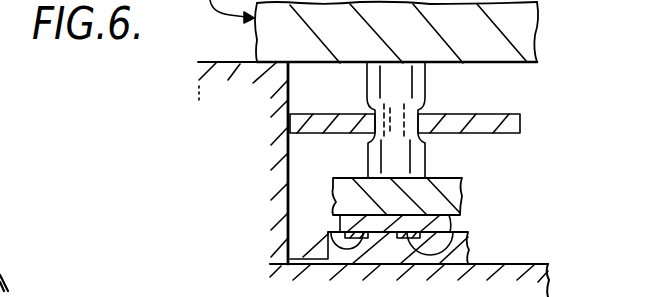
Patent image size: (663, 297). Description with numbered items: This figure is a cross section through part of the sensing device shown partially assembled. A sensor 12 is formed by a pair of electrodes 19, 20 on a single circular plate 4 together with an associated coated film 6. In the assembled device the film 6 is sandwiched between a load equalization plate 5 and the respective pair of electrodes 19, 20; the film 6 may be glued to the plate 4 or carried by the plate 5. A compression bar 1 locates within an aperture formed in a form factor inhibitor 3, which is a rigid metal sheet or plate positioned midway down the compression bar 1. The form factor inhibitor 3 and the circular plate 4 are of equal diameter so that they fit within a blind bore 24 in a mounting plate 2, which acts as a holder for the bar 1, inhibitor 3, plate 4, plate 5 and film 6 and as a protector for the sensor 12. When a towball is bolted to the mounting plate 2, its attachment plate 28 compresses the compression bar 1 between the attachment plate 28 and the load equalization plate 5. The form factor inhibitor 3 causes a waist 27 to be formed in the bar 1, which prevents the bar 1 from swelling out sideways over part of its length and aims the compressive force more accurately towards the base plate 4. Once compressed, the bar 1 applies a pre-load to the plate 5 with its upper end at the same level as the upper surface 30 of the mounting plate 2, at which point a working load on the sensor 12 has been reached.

The compression bar 1 is at (400, 91).
The mounting plate 2 is at (348, 172).
The form factor inhibitor 3 is at (419, 146).
The circular plate 4 is at (328, 233).
The load equalization plate 5 is at (444, 192).
The coated film 6 is at (338, 223).
The sensor 12 is at (473, 232).
The electrode 19 is at (290, 262).
The electrode 20 is at (470, 246).
The blind bore 24 is at (288, 155).
The waist 27 is at (354, 133).
The attachment plate 28 is at (527, 44).
The upper surface 30 is at (254, 60).